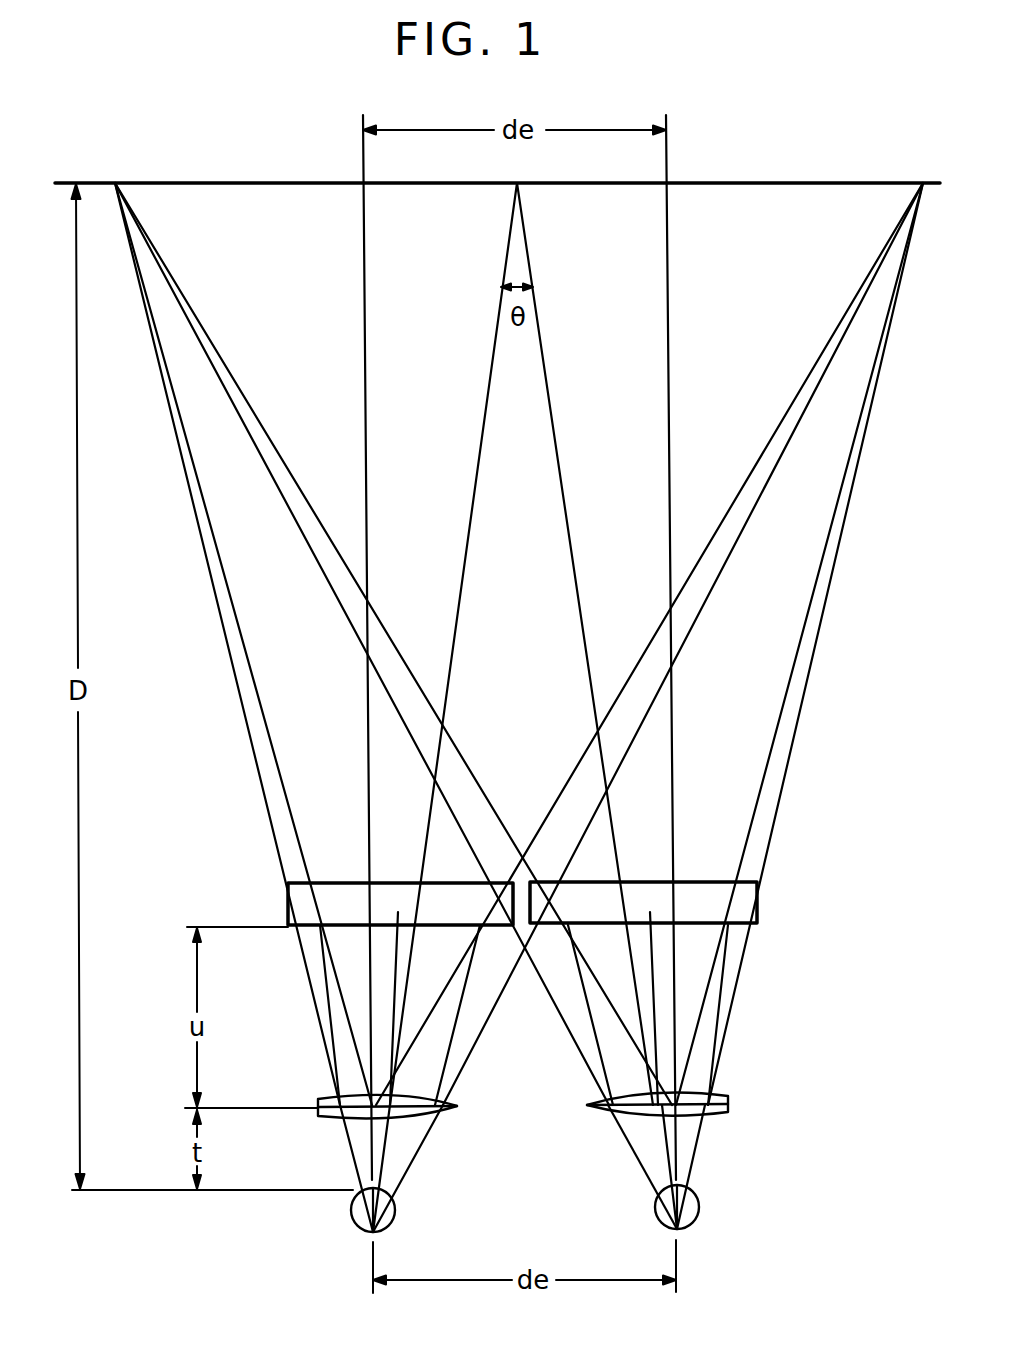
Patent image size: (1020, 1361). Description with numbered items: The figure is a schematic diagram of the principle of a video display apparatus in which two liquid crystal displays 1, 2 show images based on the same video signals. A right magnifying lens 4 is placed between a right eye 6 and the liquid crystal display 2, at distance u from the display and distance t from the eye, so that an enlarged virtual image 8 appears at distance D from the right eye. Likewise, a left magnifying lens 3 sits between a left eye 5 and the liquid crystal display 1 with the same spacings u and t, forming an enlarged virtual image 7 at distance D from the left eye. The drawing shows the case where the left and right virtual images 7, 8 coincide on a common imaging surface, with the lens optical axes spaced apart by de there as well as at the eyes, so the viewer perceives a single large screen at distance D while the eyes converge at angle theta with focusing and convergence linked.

The liquid crystal display 1 is at (338, 883).
The liquid crystal display 2 is at (700, 882).
The left magnifying lens 3 is at (457, 1106).
The right magnifying lens 4 is at (727, 1100).
The left eye 5 is at (395, 1212).
The right eye 6 is at (699, 1204).
The virtual image 7 is at (497, 157).
The virtual image 8 is at (203, 183).